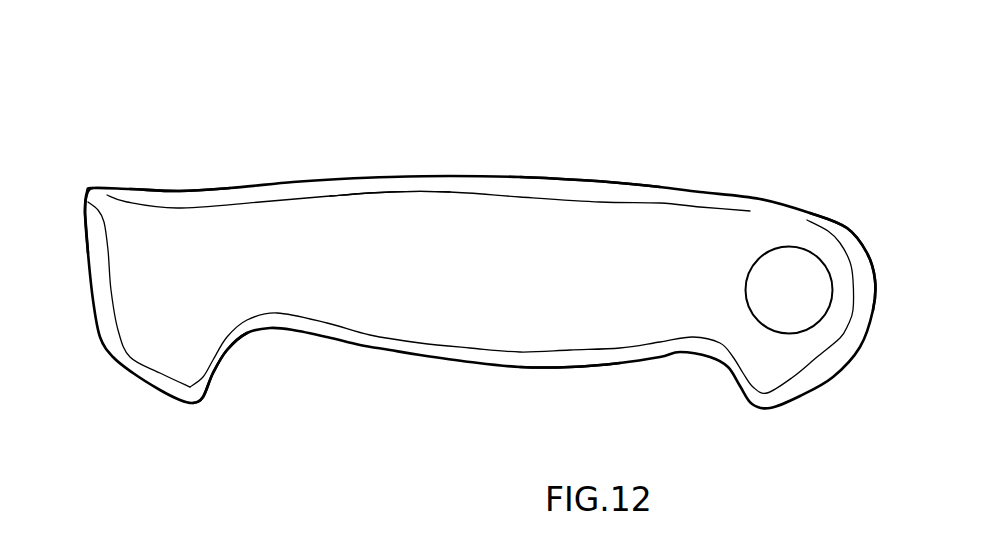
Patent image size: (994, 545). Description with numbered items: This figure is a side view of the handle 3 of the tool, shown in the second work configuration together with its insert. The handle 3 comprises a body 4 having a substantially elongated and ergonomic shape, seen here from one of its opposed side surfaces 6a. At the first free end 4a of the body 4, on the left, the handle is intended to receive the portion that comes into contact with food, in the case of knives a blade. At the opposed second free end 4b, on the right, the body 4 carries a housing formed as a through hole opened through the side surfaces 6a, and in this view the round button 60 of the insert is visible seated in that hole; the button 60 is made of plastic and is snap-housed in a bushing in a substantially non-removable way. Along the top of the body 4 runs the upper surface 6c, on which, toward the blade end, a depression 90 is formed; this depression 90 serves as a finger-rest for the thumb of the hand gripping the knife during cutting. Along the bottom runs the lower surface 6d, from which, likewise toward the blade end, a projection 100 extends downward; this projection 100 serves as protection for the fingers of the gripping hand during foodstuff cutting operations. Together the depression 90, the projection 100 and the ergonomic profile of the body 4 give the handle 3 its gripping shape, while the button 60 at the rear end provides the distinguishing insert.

The handle 3 is at (333, 122).
The body 4 is at (520, 177).
The first free end 4a is at (78, 185).
The second free end 4b is at (848, 222).
The side surface 6a is at (393, 220).
The upper surface 6c is at (600, 175).
The lower surface 6d is at (593, 368).
The depression 90 is at (180, 190).
The projection 100 is at (217, 372).
The button 60 is at (793, 315).